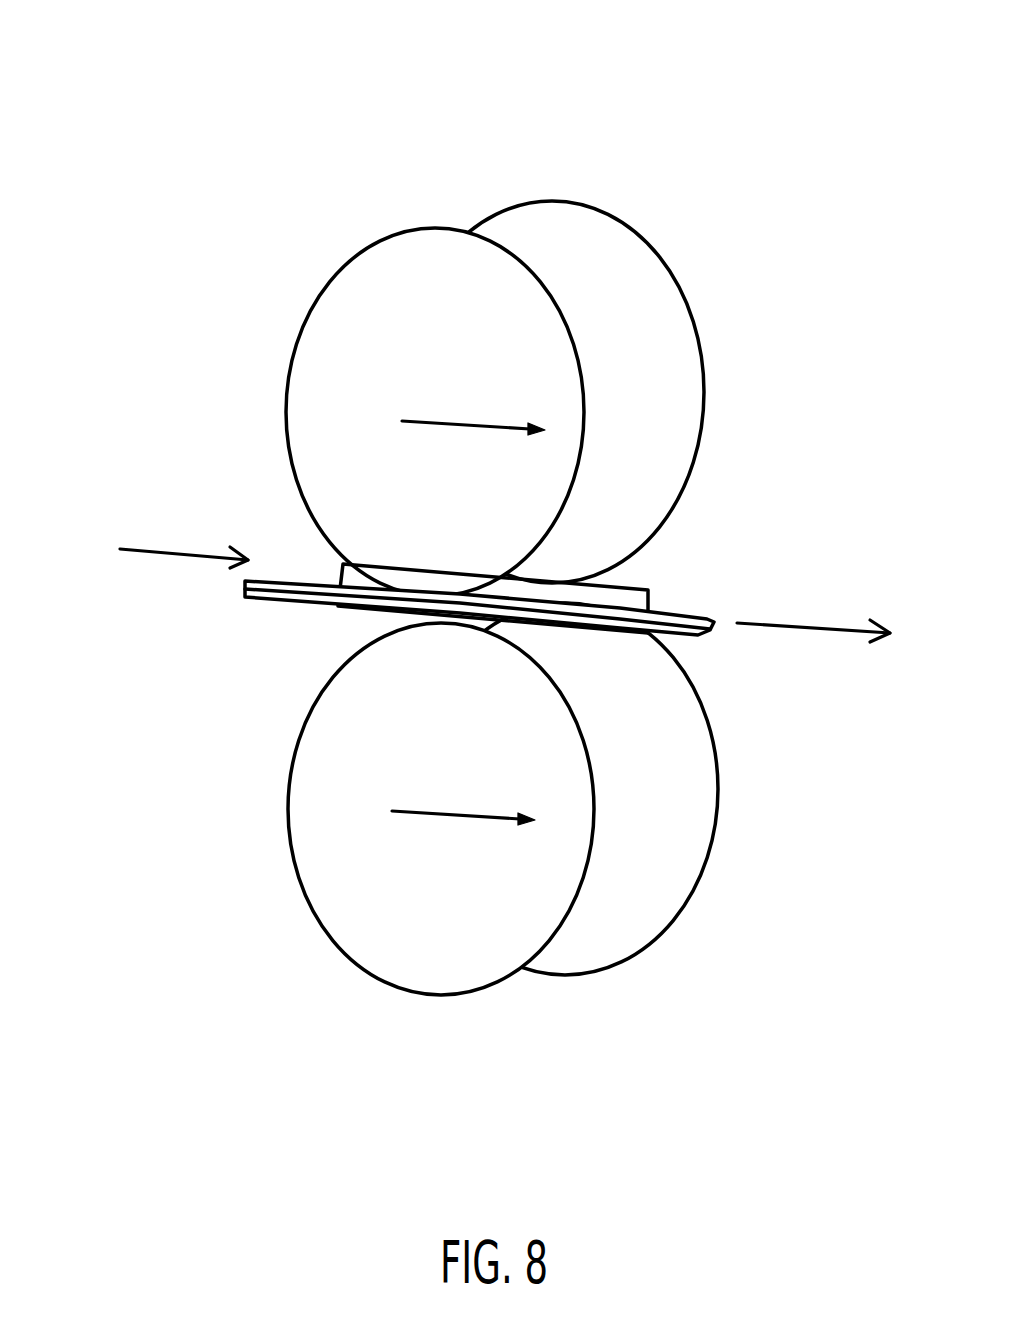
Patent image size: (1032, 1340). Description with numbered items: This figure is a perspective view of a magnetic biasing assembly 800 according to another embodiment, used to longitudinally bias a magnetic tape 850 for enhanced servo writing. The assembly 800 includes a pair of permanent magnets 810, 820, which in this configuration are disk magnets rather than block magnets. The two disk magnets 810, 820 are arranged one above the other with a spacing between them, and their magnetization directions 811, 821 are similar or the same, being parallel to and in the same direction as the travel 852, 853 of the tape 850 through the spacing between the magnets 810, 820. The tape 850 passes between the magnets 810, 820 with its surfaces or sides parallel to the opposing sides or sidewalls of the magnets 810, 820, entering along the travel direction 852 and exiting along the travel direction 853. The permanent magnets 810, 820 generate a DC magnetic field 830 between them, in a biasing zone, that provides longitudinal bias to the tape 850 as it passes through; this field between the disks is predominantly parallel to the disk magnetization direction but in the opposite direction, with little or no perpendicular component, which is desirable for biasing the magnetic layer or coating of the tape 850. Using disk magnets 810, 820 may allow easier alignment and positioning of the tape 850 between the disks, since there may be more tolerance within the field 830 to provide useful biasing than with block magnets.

The biasing assembly 800 is at (486, 547).
The permanent magnet 810 is at (650, 250).
The magnetization direction 811 is at (448, 425).
The permanent magnet 820 is at (450, 993).
The magnetization direction 821 is at (442, 815).
The field 830 is at (726, 596).
The tape 850 is at (259, 603).
The tape travel direction 852 is at (148, 550).
The tape travel direction 853 is at (833, 632).